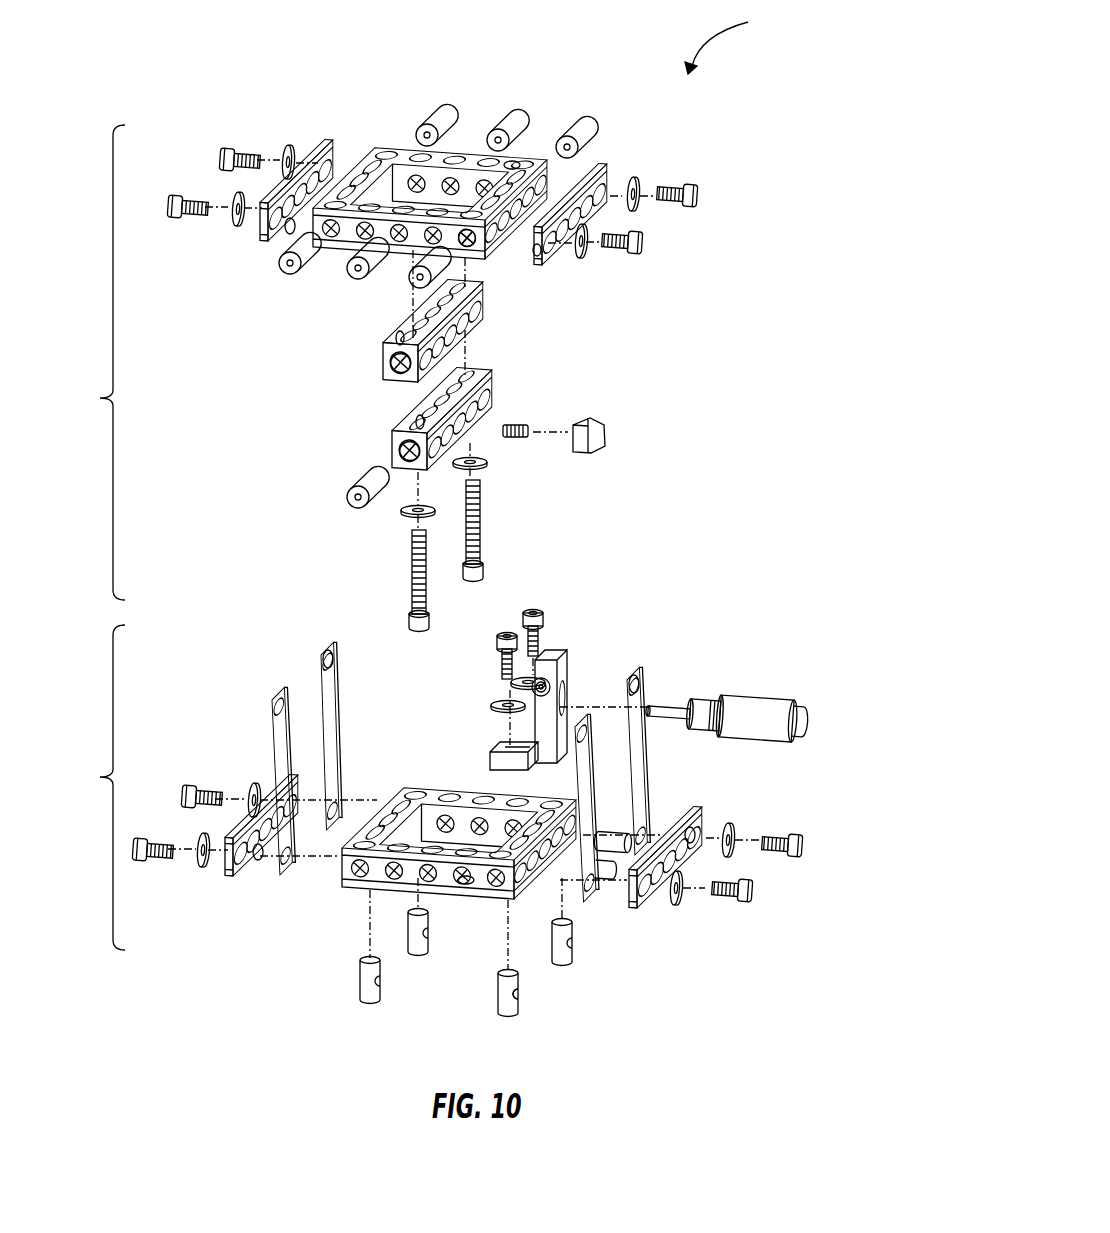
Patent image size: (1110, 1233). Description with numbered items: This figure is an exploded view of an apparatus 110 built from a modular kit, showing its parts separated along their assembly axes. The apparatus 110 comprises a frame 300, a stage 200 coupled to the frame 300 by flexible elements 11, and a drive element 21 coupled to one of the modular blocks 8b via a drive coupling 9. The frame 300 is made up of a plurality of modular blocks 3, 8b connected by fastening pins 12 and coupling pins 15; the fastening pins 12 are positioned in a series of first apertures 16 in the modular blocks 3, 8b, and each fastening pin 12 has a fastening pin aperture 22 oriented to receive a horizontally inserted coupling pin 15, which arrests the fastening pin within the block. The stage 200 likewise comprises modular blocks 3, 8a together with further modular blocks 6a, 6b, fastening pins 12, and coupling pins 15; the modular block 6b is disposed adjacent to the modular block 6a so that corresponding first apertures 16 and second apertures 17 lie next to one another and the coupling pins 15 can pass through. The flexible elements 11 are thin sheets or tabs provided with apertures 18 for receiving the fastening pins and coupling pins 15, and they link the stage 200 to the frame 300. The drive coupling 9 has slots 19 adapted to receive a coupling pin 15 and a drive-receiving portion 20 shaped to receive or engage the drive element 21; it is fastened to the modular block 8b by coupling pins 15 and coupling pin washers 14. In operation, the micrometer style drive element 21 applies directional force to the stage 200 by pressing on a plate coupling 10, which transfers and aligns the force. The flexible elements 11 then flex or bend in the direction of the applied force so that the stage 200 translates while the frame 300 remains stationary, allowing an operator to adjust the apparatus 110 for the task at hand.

The apparatus 110 is at (736, 40).
The stage 200 is at (96, 362).
The frame 300 is at (96, 787).
The modular block 8a is at (398, 150).
The modular block 8b is at (343, 890).
The modular block 3 is at (320, 155).
The modular block 6a is at (493, 386).
The modular block 6b is at (483, 302).
The plate coupling 10 is at (590, 420).
The fastening pin 12 is at (438, 126).
The fastening pin aperture 22 is at (520, 996).
The coupling pin washer 14 is at (290, 150).
The coupling pin 15 is at (230, 150).
The first aperture 16 is at (290, 228).
The second aperture 17 is at (512, 162).
The flexible element 11 is at (640, 680).
The aperture 18 is at (338, 660).
The drive coupling 9 is at (562, 660).
The drive-receiving portion 20 is at (560, 700).
The slot 19 is at (490, 752).
The drive element 21 is at (775, 696).